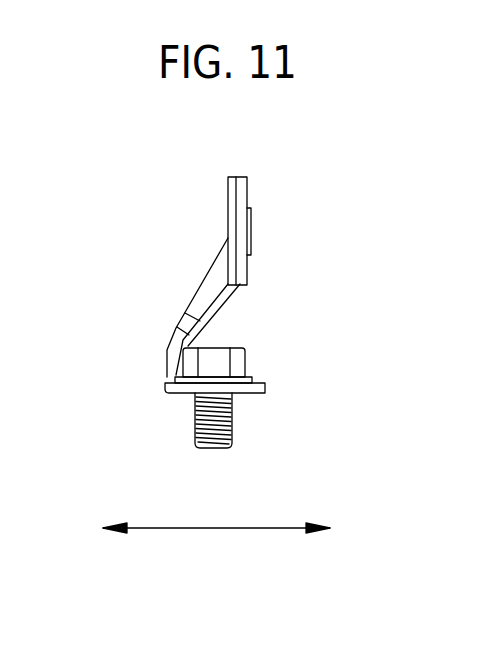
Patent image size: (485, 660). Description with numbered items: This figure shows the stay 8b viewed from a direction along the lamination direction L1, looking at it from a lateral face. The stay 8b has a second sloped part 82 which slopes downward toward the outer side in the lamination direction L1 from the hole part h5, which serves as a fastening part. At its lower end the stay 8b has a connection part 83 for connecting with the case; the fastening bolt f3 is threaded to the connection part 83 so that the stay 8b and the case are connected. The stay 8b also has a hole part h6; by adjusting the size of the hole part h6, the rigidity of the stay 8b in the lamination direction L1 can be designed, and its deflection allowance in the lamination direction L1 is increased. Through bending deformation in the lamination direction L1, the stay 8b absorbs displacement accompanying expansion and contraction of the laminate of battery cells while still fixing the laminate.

The stay 8b is at (193, 241).
The second sloped part 82 is at (217, 288).
The connection part 83 is at (243, 397).
The hole part h5 is at (242, 227).
The hole part h6 is at (179, 313).
The fastening bolt f3 is at (245, 348).
The lamination direction L1 is at (225, 529).